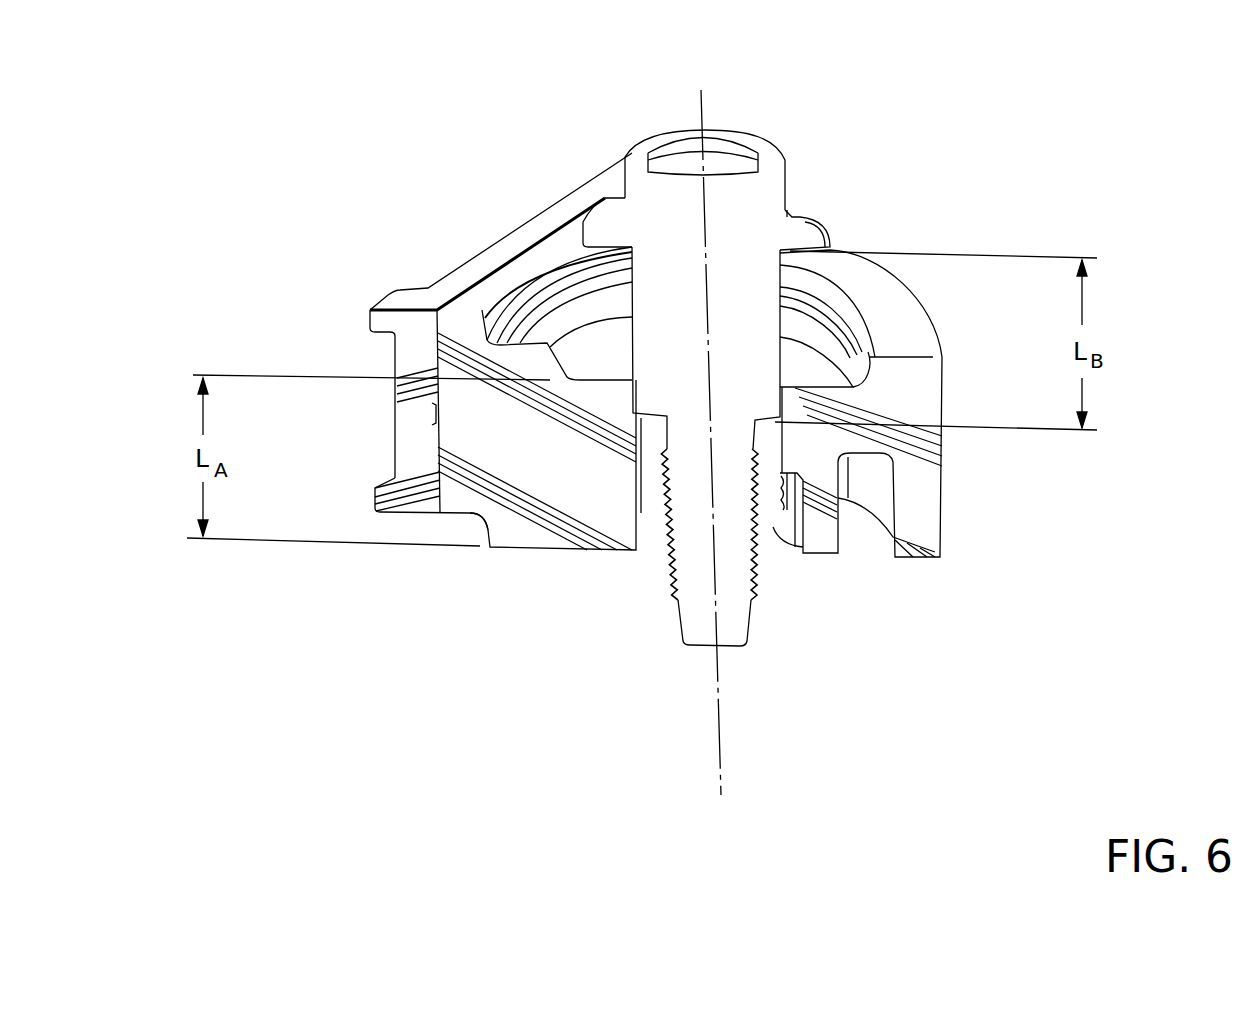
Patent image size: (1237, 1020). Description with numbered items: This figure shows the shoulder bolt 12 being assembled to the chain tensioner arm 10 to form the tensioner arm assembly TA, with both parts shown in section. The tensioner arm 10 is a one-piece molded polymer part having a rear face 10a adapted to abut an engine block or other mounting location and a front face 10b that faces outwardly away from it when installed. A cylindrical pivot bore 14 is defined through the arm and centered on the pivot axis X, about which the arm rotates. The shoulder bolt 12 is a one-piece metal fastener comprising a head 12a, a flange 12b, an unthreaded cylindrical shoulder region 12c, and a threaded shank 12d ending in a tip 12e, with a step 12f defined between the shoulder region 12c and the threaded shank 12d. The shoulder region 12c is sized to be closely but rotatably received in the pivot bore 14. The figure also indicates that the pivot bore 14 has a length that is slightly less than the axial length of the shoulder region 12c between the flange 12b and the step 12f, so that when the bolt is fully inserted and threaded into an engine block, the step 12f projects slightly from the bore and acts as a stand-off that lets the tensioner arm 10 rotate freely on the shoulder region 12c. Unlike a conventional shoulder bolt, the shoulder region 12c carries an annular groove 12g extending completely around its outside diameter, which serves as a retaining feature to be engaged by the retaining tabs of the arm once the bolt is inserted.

The chain tensioner arm 10 is at (738, 401).
The rear face 10a is at (537, 550).
The front face 10b is at (813, 373).
The shoulder bolt 12 is at (783, 353).
The head 12a is at (790, 178).
The flange 12b is at (805, 285).
The shoulder region 12c is at (822, 272).
The threaded shank 12d is at (752, 520).
The tip 12e is at (750, 627).
The step 12f is at (645, 513).
The annular groove 12g is at (600, 378).
The pivot bore 14 is at (773, 527).
The tensioner arm assembly TA is at (515, 110).
The pivot axis X is at (720, 732).